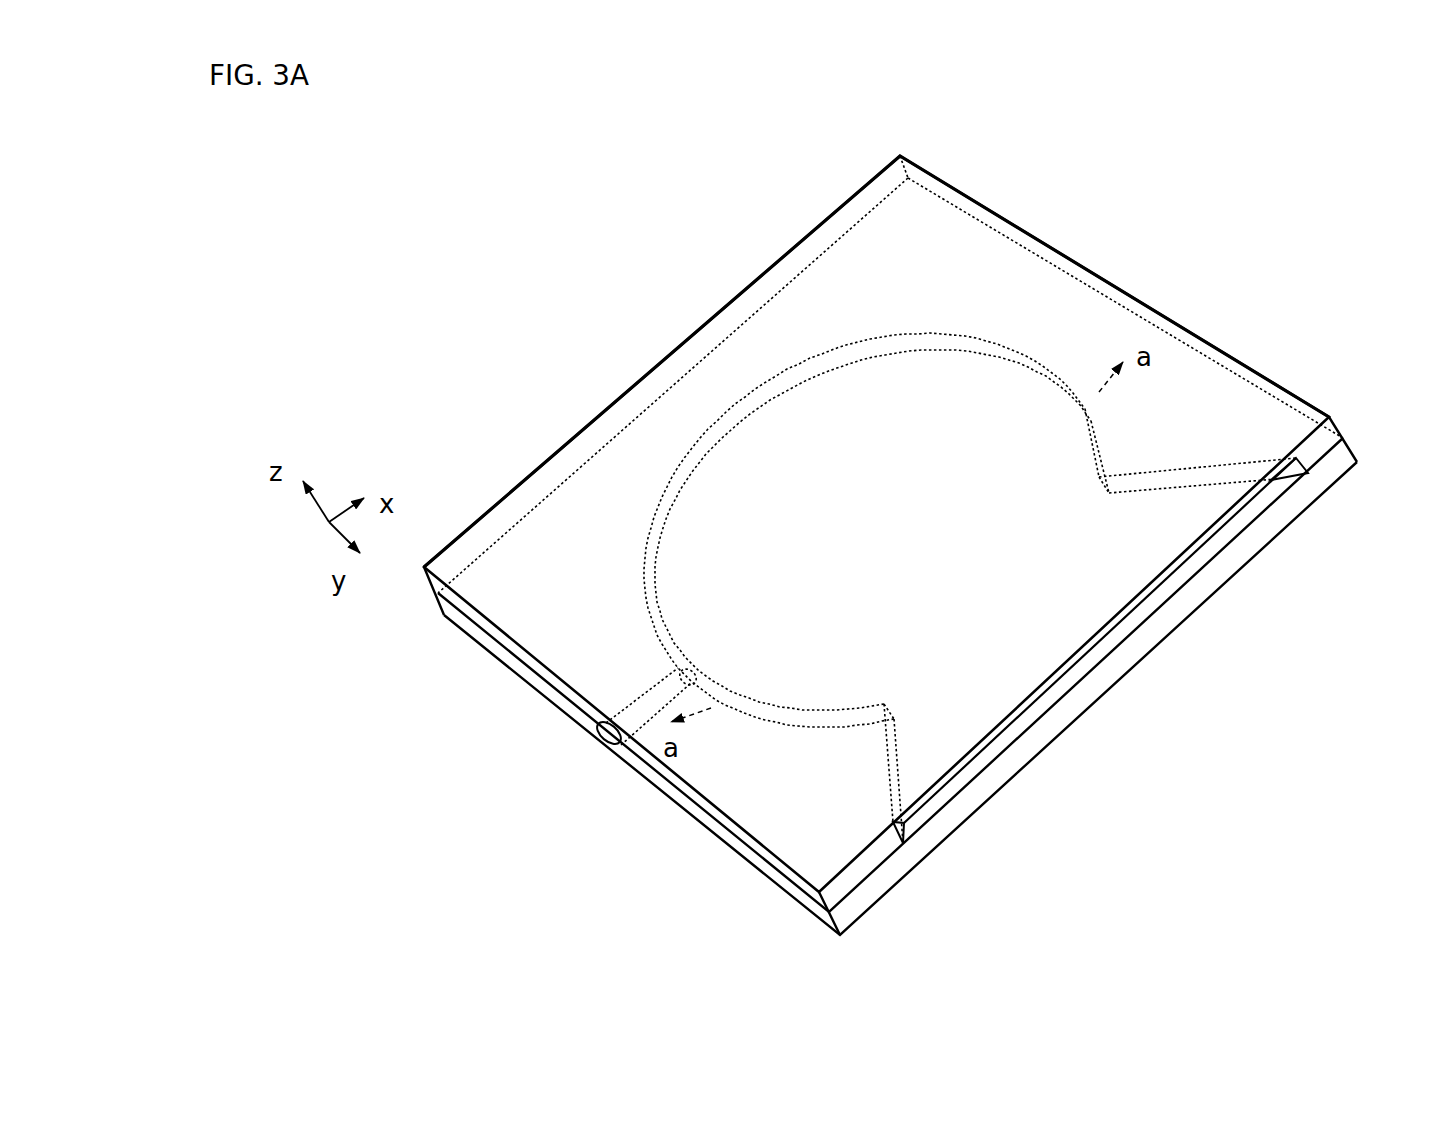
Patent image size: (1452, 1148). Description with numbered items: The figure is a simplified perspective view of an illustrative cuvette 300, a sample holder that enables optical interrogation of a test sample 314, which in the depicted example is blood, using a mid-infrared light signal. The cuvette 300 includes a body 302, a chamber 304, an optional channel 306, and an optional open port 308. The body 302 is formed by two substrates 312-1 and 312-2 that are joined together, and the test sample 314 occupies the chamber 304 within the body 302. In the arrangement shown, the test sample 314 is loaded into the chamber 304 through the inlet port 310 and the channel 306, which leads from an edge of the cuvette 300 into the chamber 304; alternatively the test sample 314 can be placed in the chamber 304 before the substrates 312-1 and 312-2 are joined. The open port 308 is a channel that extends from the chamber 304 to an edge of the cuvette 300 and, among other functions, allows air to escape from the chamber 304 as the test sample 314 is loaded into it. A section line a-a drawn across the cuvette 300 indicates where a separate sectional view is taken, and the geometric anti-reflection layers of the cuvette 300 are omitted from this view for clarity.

The cuvette 300 is at (486, 192).
The body 302 is at (1141, 278).
The chamber 304 is at (779, 464).
The channel 306 is at (617, 687).
The open port 308 is at (1132, 623).
The inlet port 310 is at (585, 744).
The substrate 312-1 is at (874, 850).
The substrate 312-2 is at (856, 907).
The test sample 314 is at (955, 578).